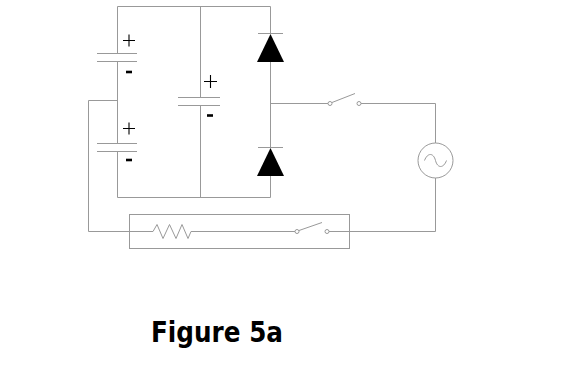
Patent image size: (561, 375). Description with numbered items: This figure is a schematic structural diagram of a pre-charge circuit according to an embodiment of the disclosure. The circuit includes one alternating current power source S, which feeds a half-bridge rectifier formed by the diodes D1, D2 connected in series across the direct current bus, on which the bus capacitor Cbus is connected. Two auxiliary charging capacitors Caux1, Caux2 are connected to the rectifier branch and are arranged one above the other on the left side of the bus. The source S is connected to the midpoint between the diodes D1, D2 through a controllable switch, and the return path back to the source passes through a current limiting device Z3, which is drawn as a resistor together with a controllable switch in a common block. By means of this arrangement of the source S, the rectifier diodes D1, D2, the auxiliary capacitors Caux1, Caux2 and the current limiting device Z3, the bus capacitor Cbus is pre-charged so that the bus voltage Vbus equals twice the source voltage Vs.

The auxiliary charging capacitor Caux1 is at (100, 52).
The auxiliary charging capacitor Caux2 is at (83, 142).
The bus capacitor Cbus is at (220, 95).
The diode D1 is at (282, 48).
The diode D2 is at (282, 162).
The alternating current power source S is at (427, 160).
The current limiting device Z3 is at (240, 243).